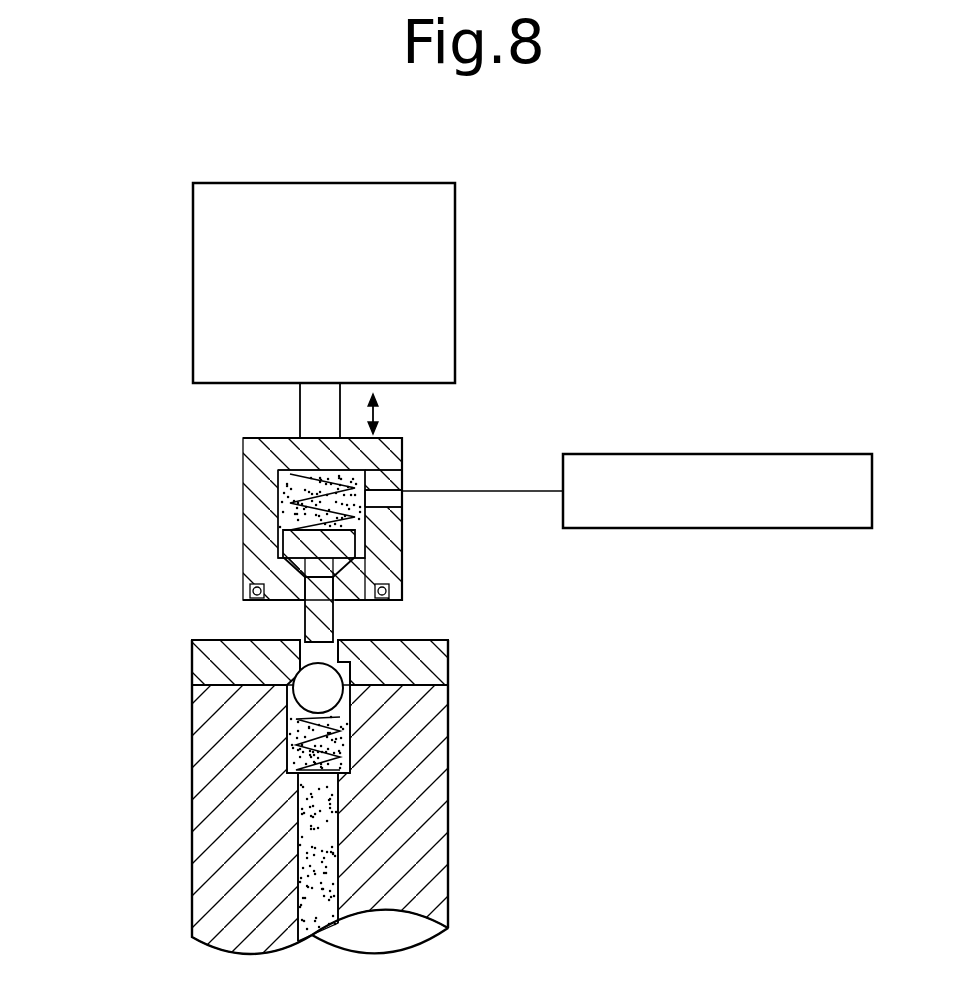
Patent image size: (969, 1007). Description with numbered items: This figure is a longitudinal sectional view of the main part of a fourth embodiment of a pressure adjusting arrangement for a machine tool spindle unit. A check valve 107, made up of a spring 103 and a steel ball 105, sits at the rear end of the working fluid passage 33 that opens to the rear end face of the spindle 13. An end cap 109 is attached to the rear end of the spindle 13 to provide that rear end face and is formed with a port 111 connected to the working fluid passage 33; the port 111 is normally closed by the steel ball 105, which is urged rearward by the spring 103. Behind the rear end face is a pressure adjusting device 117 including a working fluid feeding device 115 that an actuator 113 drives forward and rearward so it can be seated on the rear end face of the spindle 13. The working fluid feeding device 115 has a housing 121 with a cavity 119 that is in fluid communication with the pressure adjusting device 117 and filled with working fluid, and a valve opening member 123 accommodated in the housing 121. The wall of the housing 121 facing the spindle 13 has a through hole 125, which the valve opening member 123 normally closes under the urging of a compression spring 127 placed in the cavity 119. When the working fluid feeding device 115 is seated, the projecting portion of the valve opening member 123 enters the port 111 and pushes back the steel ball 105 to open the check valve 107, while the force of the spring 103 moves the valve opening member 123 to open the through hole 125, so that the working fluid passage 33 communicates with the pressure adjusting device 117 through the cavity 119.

The actuator 113 is at (455, 300).
The pressure adjusting device 117 is at (660, 454).
The working fluid feeding device 115 is at (243, 508).
The compression spring 127 is at (402, 477).
The cavity 119 is at (402, 510).
The housing 121 is at (402, 566).
The valve opening member 123 is at (298, 540).
The through hole 125 is at (305, 610).
The port 111 is at (460, 646).
The end cap 109 is at (437, 668).
The check valve 107 is at (287, 730).
The steel ball 105 is at (325, 690).
The spring 103 is at (342, 746).
The spindle 13 is at (433, 818).
The working fluid passage 33 is at (332, 880).